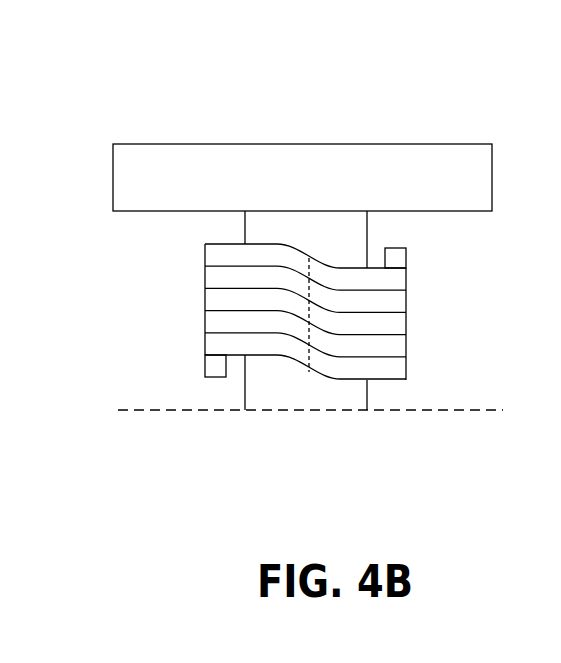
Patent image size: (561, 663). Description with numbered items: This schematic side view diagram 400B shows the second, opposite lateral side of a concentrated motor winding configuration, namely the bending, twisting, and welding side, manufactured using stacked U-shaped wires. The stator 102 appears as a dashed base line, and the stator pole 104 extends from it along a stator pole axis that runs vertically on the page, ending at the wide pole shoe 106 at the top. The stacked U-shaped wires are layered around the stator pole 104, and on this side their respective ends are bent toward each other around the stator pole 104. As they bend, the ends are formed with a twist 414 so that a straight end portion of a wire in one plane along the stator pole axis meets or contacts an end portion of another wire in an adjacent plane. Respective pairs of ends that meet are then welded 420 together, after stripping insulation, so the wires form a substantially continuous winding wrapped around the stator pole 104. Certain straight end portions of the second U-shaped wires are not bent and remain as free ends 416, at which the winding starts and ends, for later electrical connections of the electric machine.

The schematic side view diagram 400B is at (438, 63).
The pole shoe 106 is at (156, 141).
The twist 414 is at (339, 383).
The weld 420 is at (307, 383).
The free ends 416 is at (413, 256).
The stator pole 104 is at (239, 392).
The stator 102 is at (172, 422).